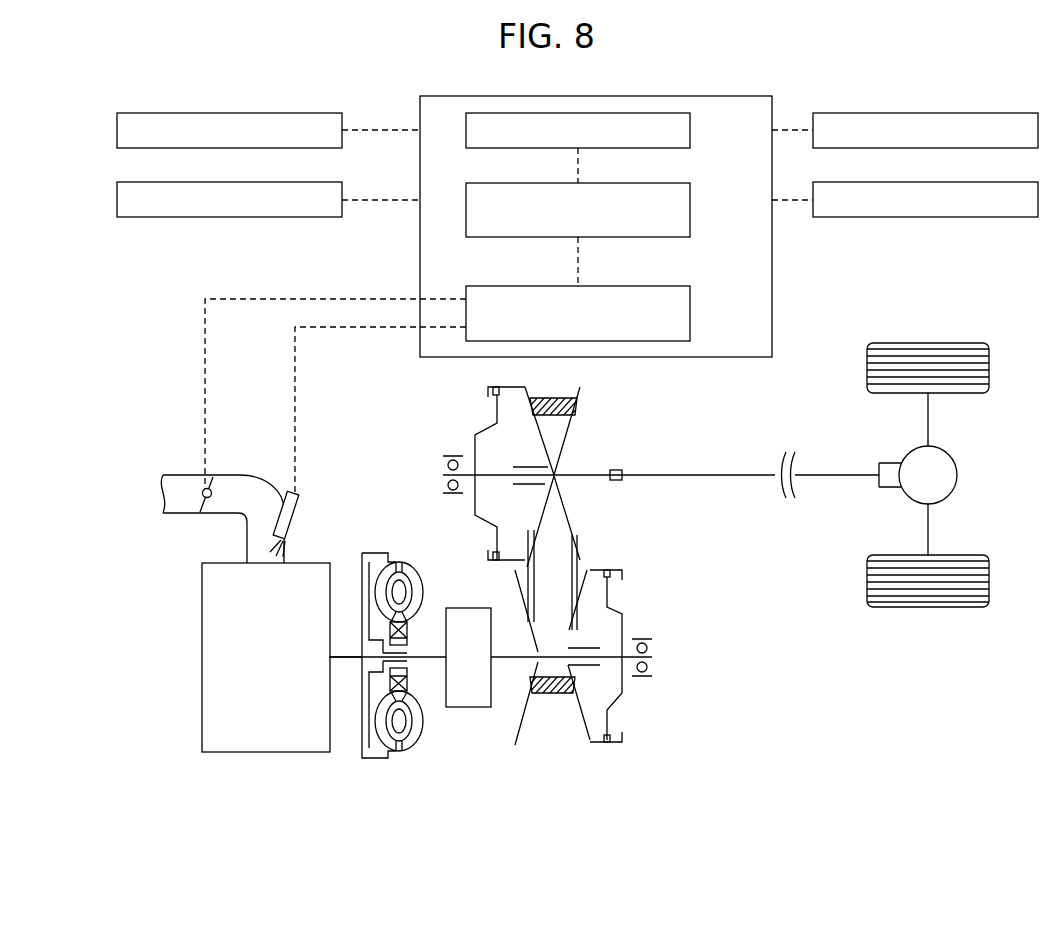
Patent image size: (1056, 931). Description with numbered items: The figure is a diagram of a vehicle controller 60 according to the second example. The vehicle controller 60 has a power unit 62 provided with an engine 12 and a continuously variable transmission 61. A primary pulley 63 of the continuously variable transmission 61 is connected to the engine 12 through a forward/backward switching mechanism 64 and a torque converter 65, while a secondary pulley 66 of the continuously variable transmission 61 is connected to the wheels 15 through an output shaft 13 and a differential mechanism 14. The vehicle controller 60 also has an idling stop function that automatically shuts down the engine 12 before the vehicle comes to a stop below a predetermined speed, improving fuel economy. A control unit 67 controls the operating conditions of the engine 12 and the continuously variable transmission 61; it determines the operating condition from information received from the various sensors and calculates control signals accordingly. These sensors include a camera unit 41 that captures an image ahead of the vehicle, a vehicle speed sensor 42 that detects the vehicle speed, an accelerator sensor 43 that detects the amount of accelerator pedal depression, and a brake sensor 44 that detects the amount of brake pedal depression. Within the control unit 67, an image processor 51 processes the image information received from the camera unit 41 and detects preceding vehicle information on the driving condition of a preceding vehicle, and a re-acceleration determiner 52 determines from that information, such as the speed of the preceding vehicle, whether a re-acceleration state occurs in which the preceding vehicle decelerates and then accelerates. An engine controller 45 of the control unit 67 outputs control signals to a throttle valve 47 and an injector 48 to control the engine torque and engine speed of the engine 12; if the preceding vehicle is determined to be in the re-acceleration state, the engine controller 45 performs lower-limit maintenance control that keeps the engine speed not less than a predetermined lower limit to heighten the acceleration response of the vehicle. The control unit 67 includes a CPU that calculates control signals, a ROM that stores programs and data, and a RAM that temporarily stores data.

The vehicle controller 60 is at (112, 96).
The camera unit 41 is at (259, 113).
The vehicle speed sensor 42 is at (259, 182).
The accelerator sensor 43 is at (957, 113).
The brake sensor 44 is at (957, 182).
The engine controller 45 is at (692, 316).
The image processor 51 is at (692, 131).
The re-acceleration determiner 52 is at (692, 205).
The control unit 67 is at (644, 97).
The engine 12 is at (248, 754).
The output shaft 13 is at (838, 470).
The differential mechanism 14 is at (962, 473).
The wheels 15 is at (993, 365).
The throttle valve 47 is at (205, 487).
The injector 48 is at (297, 512).
The continuously variable transmission 61 is at (636, 553).
The power unit 62 is at (150, 731).
The primary pulley 63 is at (622, 693).
The forward/backward switching mechanism 64 is at (470, 708).
The torque converter 65 is at (415, 752).
The secondary pulley 66 is at (573, 432).